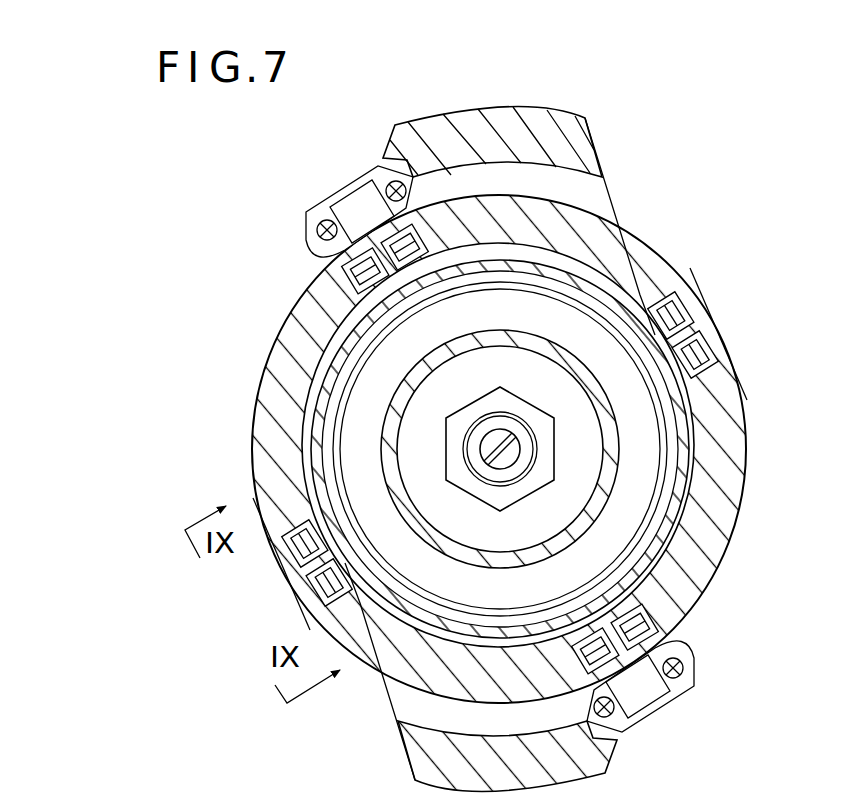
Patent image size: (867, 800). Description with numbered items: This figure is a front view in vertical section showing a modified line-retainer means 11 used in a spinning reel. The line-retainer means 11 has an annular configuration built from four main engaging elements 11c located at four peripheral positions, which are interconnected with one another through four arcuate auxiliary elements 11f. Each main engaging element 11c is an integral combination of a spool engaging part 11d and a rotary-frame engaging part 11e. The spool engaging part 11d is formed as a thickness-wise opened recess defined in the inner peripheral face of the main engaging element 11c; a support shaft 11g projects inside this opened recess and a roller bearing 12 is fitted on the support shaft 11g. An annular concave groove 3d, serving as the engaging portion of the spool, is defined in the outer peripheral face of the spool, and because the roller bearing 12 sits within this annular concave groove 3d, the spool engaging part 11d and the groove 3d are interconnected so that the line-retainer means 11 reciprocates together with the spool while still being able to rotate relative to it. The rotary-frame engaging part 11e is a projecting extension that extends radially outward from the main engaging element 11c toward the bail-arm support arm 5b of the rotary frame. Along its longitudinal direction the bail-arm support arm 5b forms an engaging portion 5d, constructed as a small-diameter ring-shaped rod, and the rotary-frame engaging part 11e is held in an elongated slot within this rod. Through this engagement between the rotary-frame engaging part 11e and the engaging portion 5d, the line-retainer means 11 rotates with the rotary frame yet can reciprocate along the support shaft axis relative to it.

The bail-arm support arm 5b is at (582, 136).
The engaging portion of the rotary frame 5d is at (388, 186).
The annular concave groove 3d is at (598, 282).
The line-retainer means 11 is at (401, 449).
The main engaging element 11c is at (268, 254).
The rotary-frame engaging part 11e is at (357, 198).
The spool engaging part 11d is at (300, 283).
The support shaft 11g is at (388, 260).
The roller bearing 12 is at (362, 290).
The arcuate auxiliary element 11f is at (262, 389).